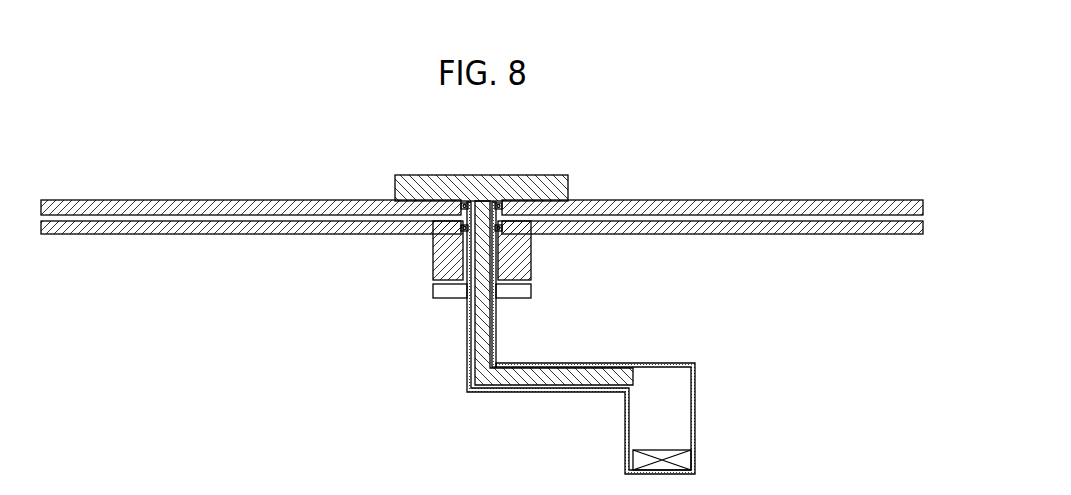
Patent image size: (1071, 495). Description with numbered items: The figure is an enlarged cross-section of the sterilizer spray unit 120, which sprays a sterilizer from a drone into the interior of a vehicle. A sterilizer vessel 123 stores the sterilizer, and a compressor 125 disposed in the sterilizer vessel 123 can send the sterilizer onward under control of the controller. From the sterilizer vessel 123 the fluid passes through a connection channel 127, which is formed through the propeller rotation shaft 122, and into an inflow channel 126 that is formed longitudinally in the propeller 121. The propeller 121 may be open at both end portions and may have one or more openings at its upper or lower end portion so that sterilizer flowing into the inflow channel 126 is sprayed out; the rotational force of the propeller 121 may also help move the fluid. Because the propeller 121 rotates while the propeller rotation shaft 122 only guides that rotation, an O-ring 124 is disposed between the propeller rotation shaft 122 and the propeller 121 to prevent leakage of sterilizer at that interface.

The sterilizer spray unit 120 is at (509, 134).
The propeller 121 is at (696, 204).
The propeller rotation shaft 122 is at (546, 182).
The sterilizer vessel 123 is at (680, 430).
The O-ring 124 is at (463, 228).
The compressor 125 is at (686, 459).
The inflow channel 126 is at (755, 222).
The connection channel 127 is at (500, 330).